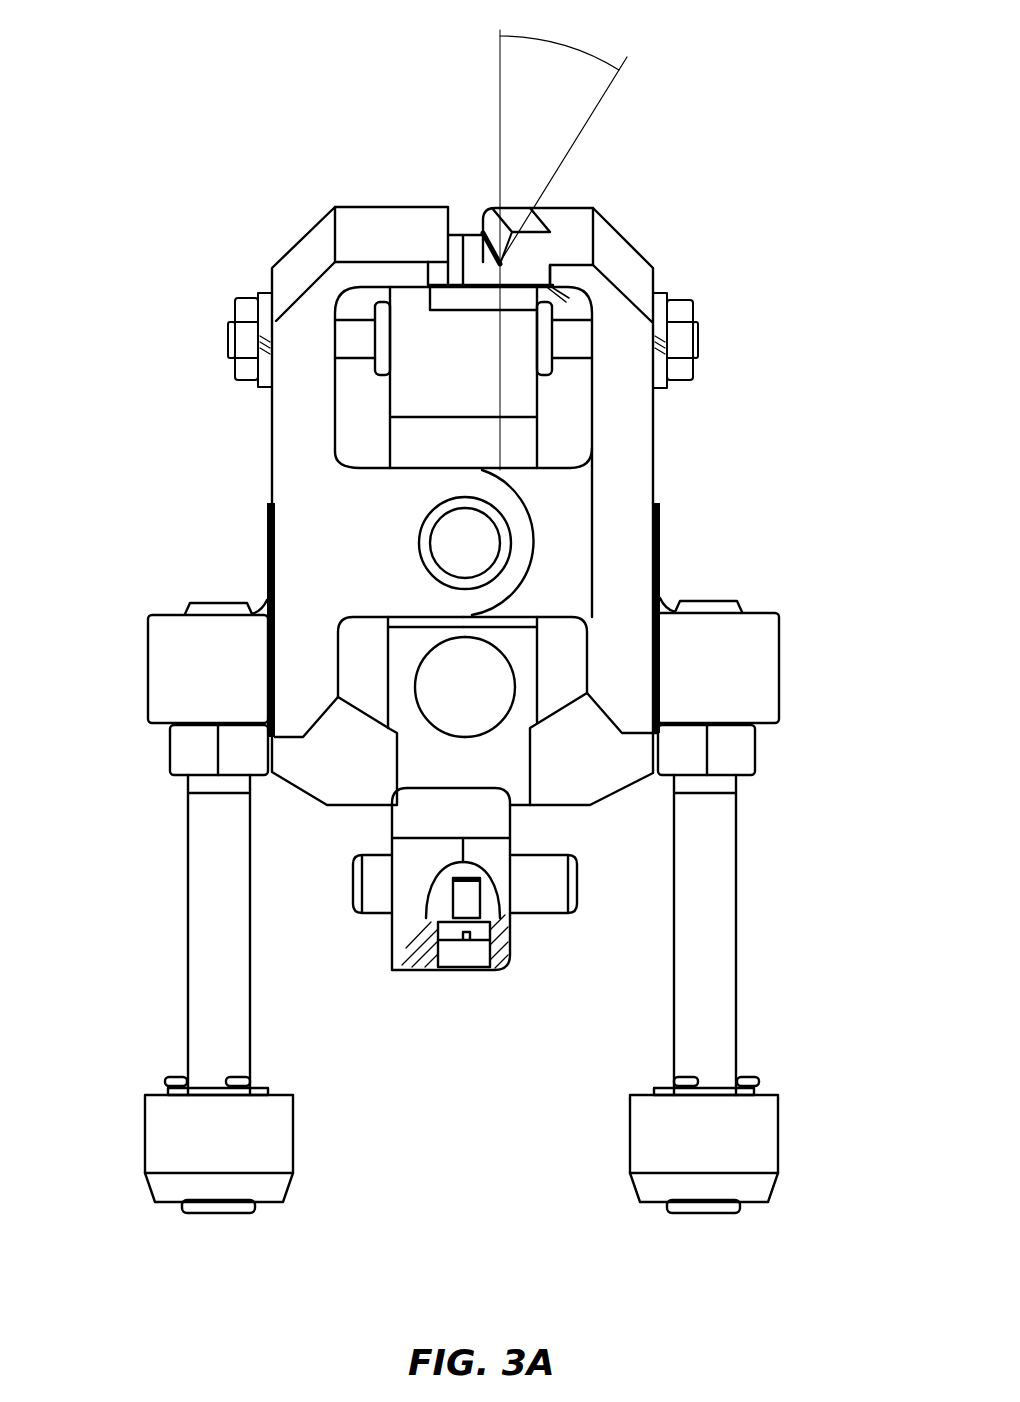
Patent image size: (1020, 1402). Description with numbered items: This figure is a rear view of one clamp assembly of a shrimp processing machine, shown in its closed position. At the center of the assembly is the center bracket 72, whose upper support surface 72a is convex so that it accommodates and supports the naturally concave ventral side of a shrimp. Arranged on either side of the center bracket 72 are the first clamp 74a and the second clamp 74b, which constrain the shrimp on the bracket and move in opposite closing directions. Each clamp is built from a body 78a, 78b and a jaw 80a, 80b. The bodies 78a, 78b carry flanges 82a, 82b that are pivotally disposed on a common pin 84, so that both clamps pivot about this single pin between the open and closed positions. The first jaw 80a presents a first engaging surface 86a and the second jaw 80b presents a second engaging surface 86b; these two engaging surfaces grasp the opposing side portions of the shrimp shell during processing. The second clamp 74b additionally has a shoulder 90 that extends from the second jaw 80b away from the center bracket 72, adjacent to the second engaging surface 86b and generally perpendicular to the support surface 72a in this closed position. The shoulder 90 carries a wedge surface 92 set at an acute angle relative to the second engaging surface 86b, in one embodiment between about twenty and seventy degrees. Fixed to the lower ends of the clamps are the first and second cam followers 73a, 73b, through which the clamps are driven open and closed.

The center bracket 72 is at (435, 378).
The support surface 72a is at (483, 267).
The first cam follower 73a is at (275, 1142).
The second cam follower 73b is at (645, 1143).
The first clamp 74a is at (300, 446).
The second clamp 74b is at (648, 414).
The body 78a is at (320, 543).
The body 78b is at (617, 538).
The first jaw 80a is at (357, 233).
The second jaw 80b is at (514, 218).
The flange 82a is at (413, 582).
The flange 82b is at (560, 582).
The common pin 84 is at (458, 548).
The first engaging surface 86a is at (453, 228).
The second engaging surface 86b is at (498, 268).
The shoulder 90 is at (540, 240).
The wedge surface 92 is at (498, 228).